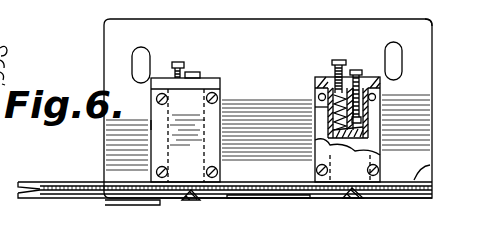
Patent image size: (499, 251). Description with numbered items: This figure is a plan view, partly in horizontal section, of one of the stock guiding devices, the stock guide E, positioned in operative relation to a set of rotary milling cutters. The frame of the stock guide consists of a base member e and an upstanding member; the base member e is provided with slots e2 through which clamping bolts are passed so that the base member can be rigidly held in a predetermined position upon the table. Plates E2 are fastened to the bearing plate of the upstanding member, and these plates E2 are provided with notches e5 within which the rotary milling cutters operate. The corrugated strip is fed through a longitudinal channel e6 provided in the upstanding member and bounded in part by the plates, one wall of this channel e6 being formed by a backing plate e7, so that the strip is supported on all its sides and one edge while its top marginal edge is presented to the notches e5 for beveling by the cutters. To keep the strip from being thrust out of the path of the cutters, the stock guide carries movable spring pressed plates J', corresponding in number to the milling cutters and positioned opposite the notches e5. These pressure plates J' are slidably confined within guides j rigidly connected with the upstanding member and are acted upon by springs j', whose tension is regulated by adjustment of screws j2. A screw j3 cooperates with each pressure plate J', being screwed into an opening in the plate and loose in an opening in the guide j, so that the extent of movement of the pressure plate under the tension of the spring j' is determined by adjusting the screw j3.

The stock guide E is at (105, 33).
The base member e is at (424, 26).
The slots e2 is at (152, 46).
The notches e5 is at (192, 202).
The longitudinal channel e6 is at (70, 194).
The backing plate e7 is at (417, 176).
The plates E2 is at (328, 195).
The guides j is at (265, 103).
The springs j' is at (300, 89).
The spring pressed plates J' is at (282, 129).
The screws j2 is at (331, 61).
The screw j3 is at (200, 71).